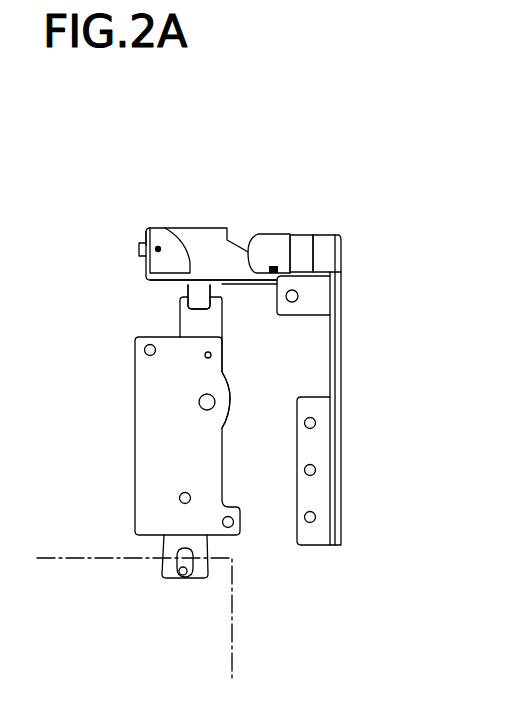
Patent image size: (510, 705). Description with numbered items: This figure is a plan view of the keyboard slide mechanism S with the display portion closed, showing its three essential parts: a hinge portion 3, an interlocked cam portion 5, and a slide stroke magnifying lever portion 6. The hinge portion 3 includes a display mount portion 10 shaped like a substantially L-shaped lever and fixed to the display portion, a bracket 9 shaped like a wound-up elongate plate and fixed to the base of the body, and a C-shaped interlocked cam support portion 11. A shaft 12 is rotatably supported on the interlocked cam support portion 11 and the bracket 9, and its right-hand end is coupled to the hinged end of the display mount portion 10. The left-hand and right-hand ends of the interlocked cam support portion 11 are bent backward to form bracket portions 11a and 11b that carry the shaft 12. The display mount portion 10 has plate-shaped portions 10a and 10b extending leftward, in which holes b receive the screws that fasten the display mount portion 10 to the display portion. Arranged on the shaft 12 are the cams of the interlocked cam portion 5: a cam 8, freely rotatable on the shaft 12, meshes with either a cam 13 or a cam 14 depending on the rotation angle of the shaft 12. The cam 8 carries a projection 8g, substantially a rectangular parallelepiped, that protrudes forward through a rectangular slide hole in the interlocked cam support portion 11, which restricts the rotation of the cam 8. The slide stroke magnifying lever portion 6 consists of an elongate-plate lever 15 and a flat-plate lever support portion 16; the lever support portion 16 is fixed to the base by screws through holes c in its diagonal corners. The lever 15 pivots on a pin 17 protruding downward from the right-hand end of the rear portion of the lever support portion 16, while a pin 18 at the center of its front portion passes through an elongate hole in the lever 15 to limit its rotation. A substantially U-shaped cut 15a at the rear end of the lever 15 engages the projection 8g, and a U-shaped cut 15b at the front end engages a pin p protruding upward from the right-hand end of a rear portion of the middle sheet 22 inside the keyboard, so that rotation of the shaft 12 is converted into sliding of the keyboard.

The hinge portion 3 is at (323, 189).
The interlocked cam portion 5 is at (179, 171).
The slide stroke magnifying lever portion 6 is at (117, 480).
The cam 8 is at (197, 231).
The projection 8g is at (208, 297).
The bracket 9 is at (307, 233).
The display mount portion 10 is at (342, 378).
The plate-shaped portion 10a is at (315, 307).
The plate-shaped portion 10b is at (310, 535).
The interlocked cam support portion 11 is at (147, 283).
The bracket portion 11a is at (145, 226).
The bracket portion 11b is at (292, 233).
The shaft 12 is at (332, 234).
The cam 13 is at (160, 232).
The cam 14 is at (257, 233).
The lever 15 is at (180, 320).
The U-shaped cut 15a is at (223, 334).
The U-shaped cut 15b is at (165, 574).
The lever support portion 16 is at (145, 427).
The pin 17 is at (210, 402).
The pin 18 is at (188, 498).
The middle sheet 22 is at (218, 648).
The holes b is at (293, 303).
The holes c is at (144, 350).
The pin p is at (182, 577).
The keyboard slide mechanism S is at (367, 226).